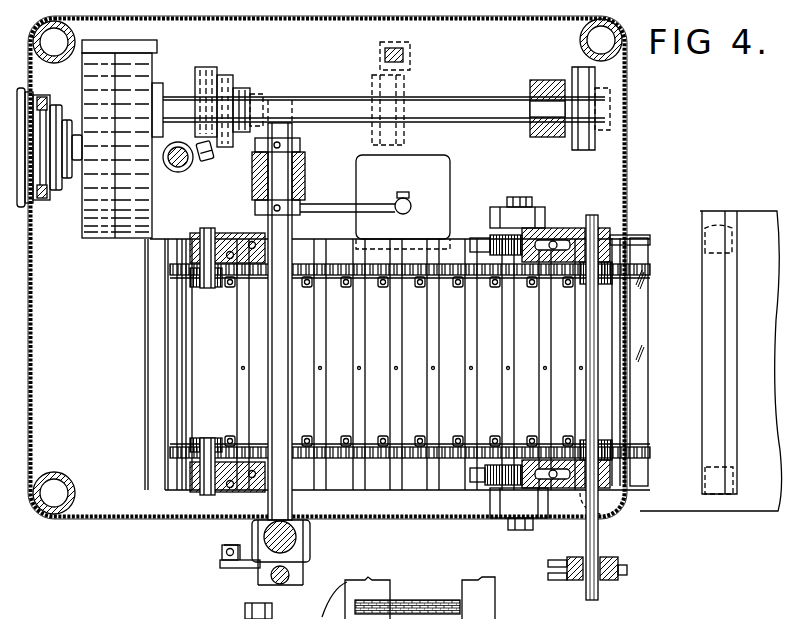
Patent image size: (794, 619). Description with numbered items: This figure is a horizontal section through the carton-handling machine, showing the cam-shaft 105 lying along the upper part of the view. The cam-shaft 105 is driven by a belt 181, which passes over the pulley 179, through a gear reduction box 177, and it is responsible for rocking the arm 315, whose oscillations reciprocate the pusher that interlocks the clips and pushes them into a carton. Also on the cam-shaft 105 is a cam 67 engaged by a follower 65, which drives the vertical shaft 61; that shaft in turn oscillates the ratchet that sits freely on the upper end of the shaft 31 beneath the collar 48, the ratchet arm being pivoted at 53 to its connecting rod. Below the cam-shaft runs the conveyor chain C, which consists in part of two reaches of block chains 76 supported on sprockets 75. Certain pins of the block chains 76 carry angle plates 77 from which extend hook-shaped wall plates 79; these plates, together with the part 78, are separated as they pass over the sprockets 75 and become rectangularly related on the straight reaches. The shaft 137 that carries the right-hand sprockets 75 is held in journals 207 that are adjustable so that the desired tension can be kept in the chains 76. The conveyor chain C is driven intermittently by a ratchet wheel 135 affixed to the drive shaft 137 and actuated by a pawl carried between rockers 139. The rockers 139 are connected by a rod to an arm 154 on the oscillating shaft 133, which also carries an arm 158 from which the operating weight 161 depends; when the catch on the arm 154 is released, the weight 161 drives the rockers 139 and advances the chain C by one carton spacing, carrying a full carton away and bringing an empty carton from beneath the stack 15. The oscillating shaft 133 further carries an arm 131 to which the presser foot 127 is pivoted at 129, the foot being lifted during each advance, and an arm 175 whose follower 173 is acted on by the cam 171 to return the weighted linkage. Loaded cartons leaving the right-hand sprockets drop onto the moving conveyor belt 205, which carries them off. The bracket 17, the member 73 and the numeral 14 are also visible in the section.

The roller 14 is at (74, 38).
The stack 15 is at (724, 443).
The bracket 17 is at (372, 588).
The shaft 31 is at (280, 616).
The collar 48 is at (232, 610).
The pivot 53 is at (156, 616).
The vertical shaft 61 is at (178, 172).
The follower 65 is at (210, 163).
The cam 67 is at (206, 67).
The member 73 is at (318, 616).
The sprockets 75 is at (215, 289).
The block chains 76 is at (368, 276).
The angle plates 77 is at (166, 332).
The part 78 is at (148, 374).
The hook-shaped wall plates 79 is at (156, 352).
The cam-shaft 105 is at (446, 112).
The presser foot 127 is at (221, 553).
The pivot 129 is at (227, 547).
The arm 131 is at (230, 570).
The oscillating shaft 133 is at (270, 228).
The ratchet wheel 135 is at (628, 571).
The drive shaft 137 is at (597, 305).
The rockers 139 is at (574, 559).
The arm 154 is at (305, 566).
The arm 158 is at (316, 206).
The operating weight 161 is at (444, 184).
The cam 171 is at (228, 80).
The follower 173 is at (249, 90).
The arm 175 is at (264, 100).
The gear reduction box 177 is at (88, 226).
The pulley 179 is at (52, 195).
The belt 181 is at (42, 202).
The conveyor belt 205 is at (752, 506).
The journals 207 is at (577, 228).
The arm 315 is at (385, 50).
The conveyor chain C is at (404, 468).